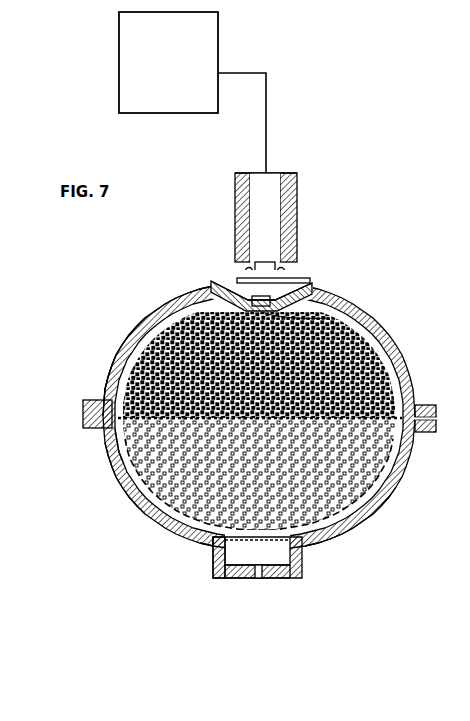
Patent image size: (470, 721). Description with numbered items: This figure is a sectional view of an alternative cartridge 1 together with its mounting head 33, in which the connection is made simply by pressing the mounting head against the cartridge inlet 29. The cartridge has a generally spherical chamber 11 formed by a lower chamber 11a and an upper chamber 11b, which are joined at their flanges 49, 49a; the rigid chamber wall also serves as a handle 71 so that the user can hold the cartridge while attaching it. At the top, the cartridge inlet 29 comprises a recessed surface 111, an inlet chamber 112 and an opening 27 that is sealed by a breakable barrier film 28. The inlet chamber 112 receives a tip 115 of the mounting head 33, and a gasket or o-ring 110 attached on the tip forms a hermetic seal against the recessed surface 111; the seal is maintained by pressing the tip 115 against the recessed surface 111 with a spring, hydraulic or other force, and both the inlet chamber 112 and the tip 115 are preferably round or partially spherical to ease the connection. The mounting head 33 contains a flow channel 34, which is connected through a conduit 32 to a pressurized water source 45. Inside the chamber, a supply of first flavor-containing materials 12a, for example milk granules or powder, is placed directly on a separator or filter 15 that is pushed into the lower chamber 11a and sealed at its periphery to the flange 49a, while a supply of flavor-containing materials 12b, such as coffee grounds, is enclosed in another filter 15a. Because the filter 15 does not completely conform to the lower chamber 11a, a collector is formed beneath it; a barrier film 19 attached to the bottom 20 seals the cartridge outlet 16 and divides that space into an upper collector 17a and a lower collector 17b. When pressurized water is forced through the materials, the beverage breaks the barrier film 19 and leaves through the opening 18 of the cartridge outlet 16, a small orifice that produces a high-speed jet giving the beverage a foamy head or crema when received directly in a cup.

The reactor vessel assembly 1 is at (432, 473).
The spherical chamber 11 is at (97, 414).
The lower chamber 11a is at (109, 470).
The upper chamber 11b is at (111, 376).
The first flavor-containing materials 12a is at (352, 497).
The flavor-containing materials 12b is at (373, 372).
The filter 15 is at (342, 537).
The filter 15a is at (112, 434).
The cartridge outlet 16 is at (322, 569).
The upper collector 17a is at (172, 529).
The lower collector 17b is at (276, 570).
The opening 18 is at (258, 579).
The barrier film 19 is at (225, 556).
The bottom 20 is at (166, 537).
The opening 27 is at (300, 296).
The breakable barrier film 28 is at (300, 318).
The cartridge inlet 29 is at (330, 279).
The conduit 32 is at (262, 142).
The mounting head 33 is at (228, 206).
The flow channel 34 is at (271, 205).
The pressurized water source 45 is at (182, 72).
The side port 49 is at (431, 410).
The flange 49a is at (432, 424).
The handle 71 is at (418, 393).
The gasket or o-ring 110 is at (303, 272).
The recessed surface 111 is at (236, 282).
The inlet chamber 112 is at (255, 281).
The tip 115 is at (292, 268).